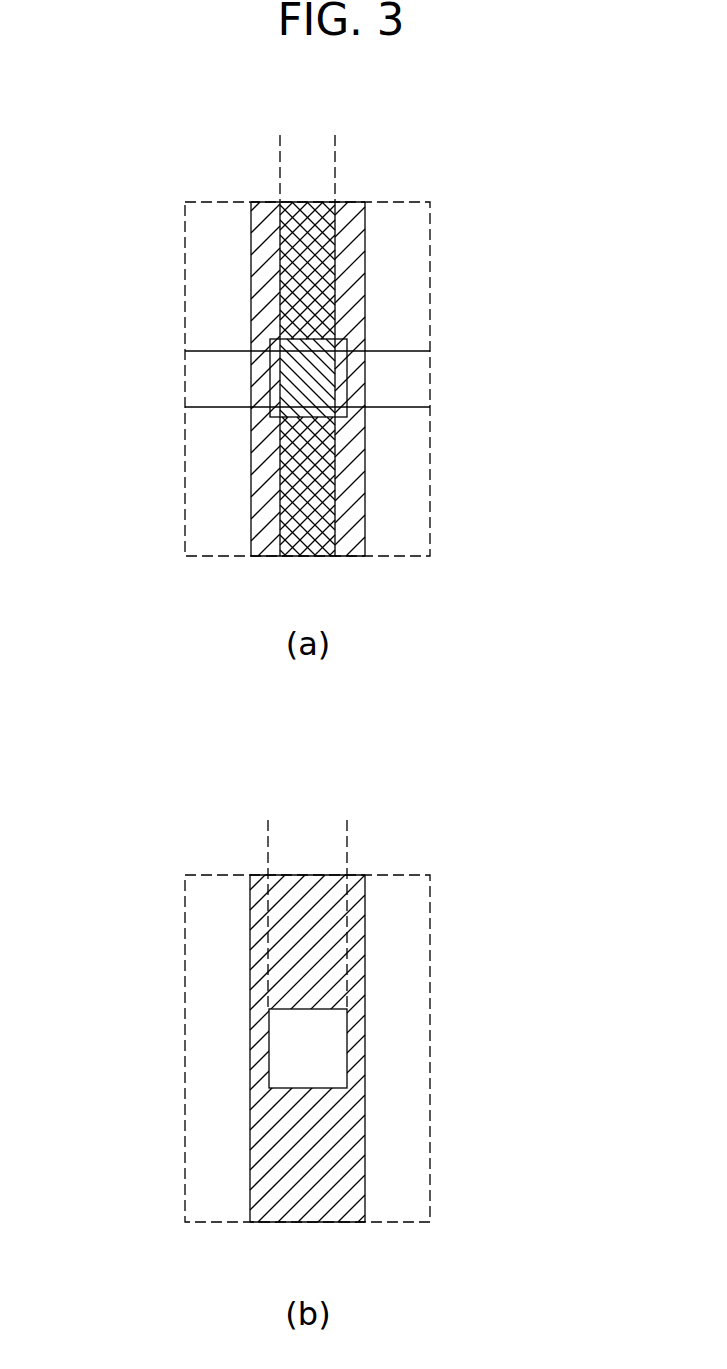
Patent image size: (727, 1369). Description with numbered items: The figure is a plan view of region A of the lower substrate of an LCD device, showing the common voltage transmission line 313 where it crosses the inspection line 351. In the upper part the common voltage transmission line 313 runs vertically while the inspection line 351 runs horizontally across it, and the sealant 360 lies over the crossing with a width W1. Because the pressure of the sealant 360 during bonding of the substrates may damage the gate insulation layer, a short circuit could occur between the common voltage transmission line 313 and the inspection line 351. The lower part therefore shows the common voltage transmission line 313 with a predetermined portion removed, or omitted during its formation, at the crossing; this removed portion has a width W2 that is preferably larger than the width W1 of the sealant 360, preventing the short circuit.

The common voltage transmission line 313 is at (343, 472).
The inspection line 351 is at (223, 403).
The sealant 360 is at (280, 293).
The region A is at (402, 200).
The width of sealant W1 is at (280, 143).
The width of removed portion W2 is at (268, 828).